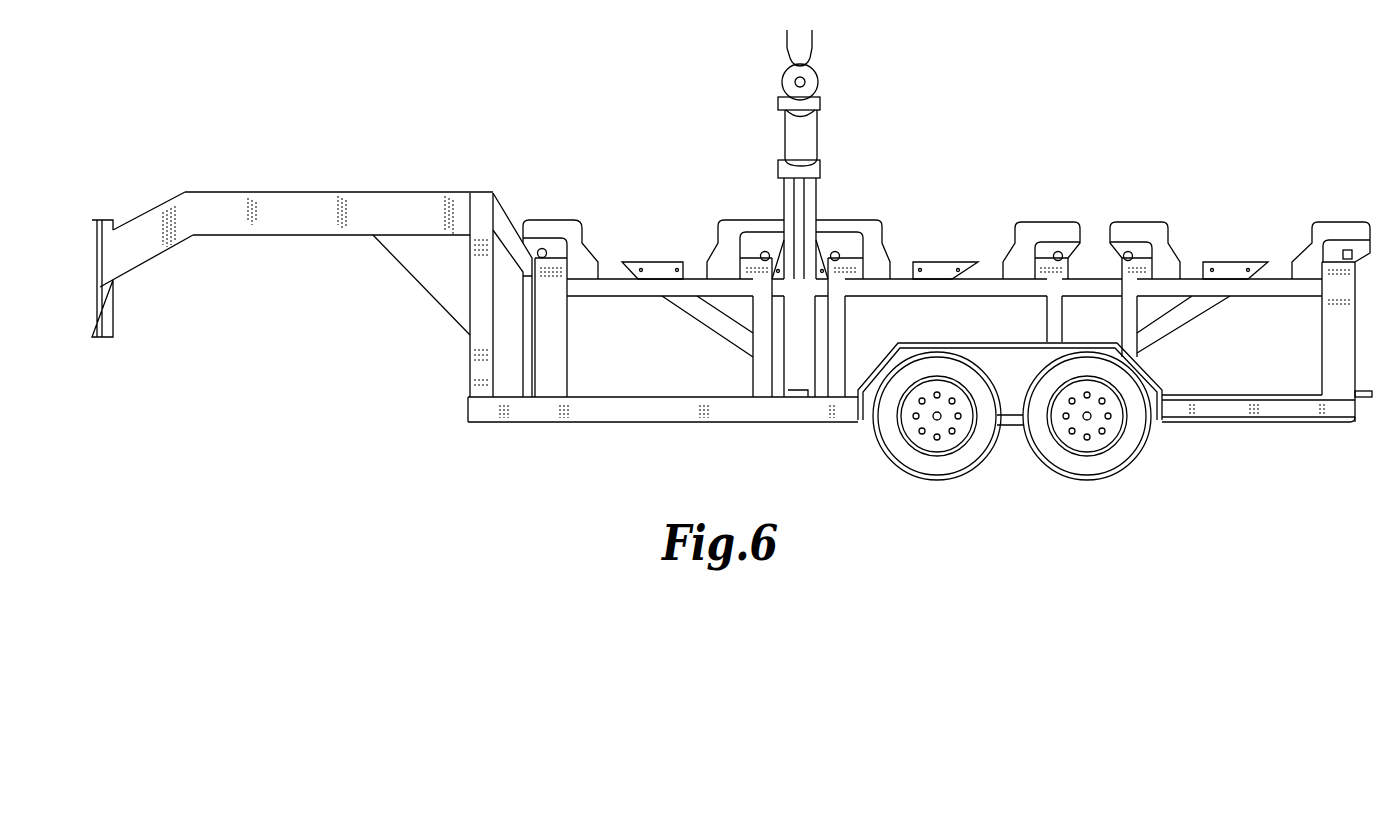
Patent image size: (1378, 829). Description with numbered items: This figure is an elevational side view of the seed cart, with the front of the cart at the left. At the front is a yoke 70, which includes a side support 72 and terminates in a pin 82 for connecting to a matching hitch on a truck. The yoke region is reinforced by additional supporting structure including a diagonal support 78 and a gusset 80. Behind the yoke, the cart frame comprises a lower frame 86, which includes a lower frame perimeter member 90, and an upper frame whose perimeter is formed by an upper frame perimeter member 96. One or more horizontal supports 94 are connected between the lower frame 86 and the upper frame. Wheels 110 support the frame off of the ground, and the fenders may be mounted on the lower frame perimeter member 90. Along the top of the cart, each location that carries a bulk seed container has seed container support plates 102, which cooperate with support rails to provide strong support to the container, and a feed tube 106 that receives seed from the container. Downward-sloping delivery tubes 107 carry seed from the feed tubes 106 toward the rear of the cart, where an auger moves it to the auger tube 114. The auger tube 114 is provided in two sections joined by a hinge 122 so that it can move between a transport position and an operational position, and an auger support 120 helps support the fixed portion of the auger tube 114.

The yoke 70 is at (265, 243).
The side support 72 is at (300, 201).
The diagonal support 78 is at (505, 212).
The gusset 80 is at (430, 274).
The pin 82 is at (114, 314).
The lower frame 86 is at (695, 432).
The lower frame perimeter member 90 is at (1224, 424).
The horizontal supports 94 is at (760, 372).
The upper frame perimeter member 96 is at (1275, 281).
The seed container support plates 102 is at (579, 230).
The feed tube 106 is at (652, 262).
The delivery tubes 107 is at (712, 330).
The wheels 110 is at (878, 445).
The auger tube 114 is at (818, 76).
The auger support 120 is at (816, 196).
The hinge 122 is at (820, 102).